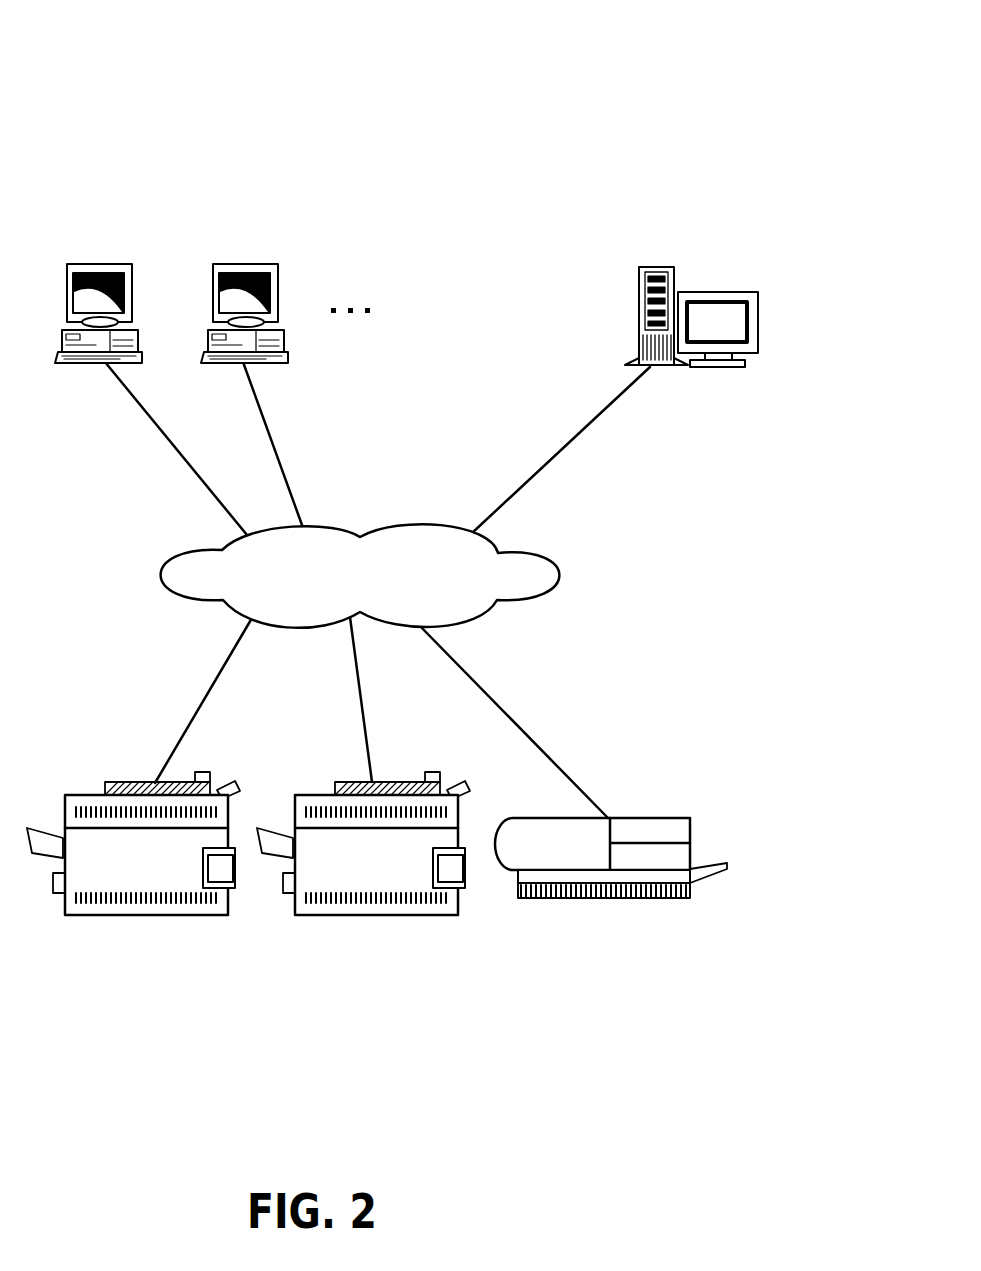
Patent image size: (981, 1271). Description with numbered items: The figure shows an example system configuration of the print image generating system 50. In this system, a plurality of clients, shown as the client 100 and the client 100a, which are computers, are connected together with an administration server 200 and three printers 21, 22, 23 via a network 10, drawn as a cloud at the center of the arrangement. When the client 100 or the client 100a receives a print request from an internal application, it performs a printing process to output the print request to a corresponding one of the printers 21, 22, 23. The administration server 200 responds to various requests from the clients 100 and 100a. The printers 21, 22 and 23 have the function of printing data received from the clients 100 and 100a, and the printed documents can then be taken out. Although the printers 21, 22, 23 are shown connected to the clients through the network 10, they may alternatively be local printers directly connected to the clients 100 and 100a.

The print image generating system 50 is at (792, 73).
The network 10 is at (512, 548).
The client 100 is at (95, 263).
The client 100a is at (238, 263).
The administration server 200 is at (659, 267).
The printer 21 is at (122, 915).
The printer 22 is at (348, 915).
The printer 23 is at (577, 898).